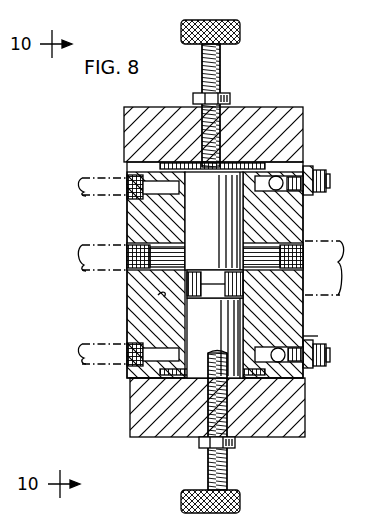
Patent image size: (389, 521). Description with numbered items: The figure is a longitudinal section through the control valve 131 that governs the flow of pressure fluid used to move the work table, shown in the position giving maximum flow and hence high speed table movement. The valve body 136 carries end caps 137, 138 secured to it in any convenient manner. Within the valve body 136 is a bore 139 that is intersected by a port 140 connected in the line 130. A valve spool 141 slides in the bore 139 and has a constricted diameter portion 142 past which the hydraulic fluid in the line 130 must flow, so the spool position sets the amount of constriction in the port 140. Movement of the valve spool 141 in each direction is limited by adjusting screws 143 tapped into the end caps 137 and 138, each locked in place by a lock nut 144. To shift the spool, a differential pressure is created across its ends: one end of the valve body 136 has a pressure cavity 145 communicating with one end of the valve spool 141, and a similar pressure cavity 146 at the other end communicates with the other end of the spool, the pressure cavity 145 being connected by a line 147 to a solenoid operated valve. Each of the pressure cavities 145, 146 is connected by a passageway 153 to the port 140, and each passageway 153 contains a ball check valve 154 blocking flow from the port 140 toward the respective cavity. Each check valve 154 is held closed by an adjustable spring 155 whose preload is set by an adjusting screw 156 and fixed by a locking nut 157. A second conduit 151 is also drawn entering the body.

The line 130 is at (96, 244).
The control valve 131 is at (324, 91).
The valve body 136 is at (304, 326).
The end cap 137 is at (303, 142).
The end cap 138 is at (305, 406).
The bore 139 is at (265, 233).
The port 140 is at (160, 296).
The valve spool 141 is at (217, 249).
The constricted diameter portion 142 is at (238, 281).
The adjusting screw 143 is at (220, 72).
The lock nut 144 is at (230, 98).
The pressure cavity 145 is at (302, 160).
The pressure cavity 146 is at (303, 376).
The line 147 is at (92, 176).
The lower side conduit 151 is at (98, 380).
The passageway 153 is at (300, 195).
The ball check valve 154 is at (328, 328).
The adjustable spring 155 is at (310, 172).
The adjusting screw 156 is at (326, 184).
The locking nut 157 is at (330, 179).